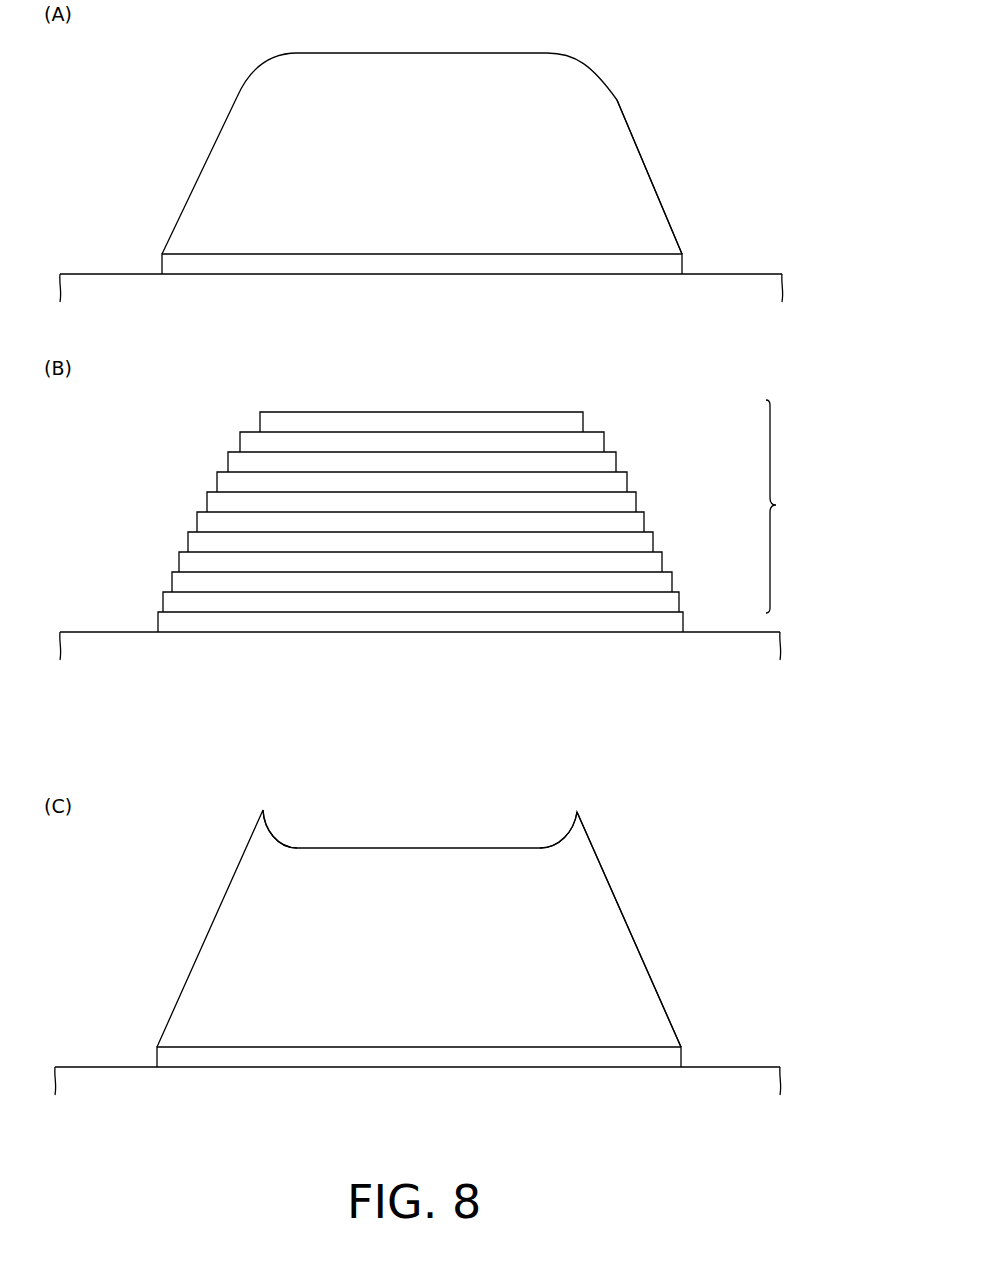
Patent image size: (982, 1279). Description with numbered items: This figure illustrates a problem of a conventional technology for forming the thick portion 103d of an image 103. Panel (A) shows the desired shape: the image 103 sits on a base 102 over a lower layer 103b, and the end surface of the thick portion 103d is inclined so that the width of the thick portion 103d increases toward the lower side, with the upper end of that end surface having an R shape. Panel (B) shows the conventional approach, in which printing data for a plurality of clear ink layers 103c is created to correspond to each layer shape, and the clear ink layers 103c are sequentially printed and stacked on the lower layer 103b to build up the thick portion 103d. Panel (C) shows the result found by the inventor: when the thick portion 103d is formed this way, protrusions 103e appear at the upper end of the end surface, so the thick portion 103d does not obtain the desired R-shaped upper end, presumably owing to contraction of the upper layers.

The substrate 102 is at (102, 272).
The image 103 is at (422, 52).
The base layer of electrode 103b is at (685, 267).
The clear ink layer 103c is at (583, 422).
The thick portion 103d is at (647, 167).
The protrusion 103e is at (264, 798).